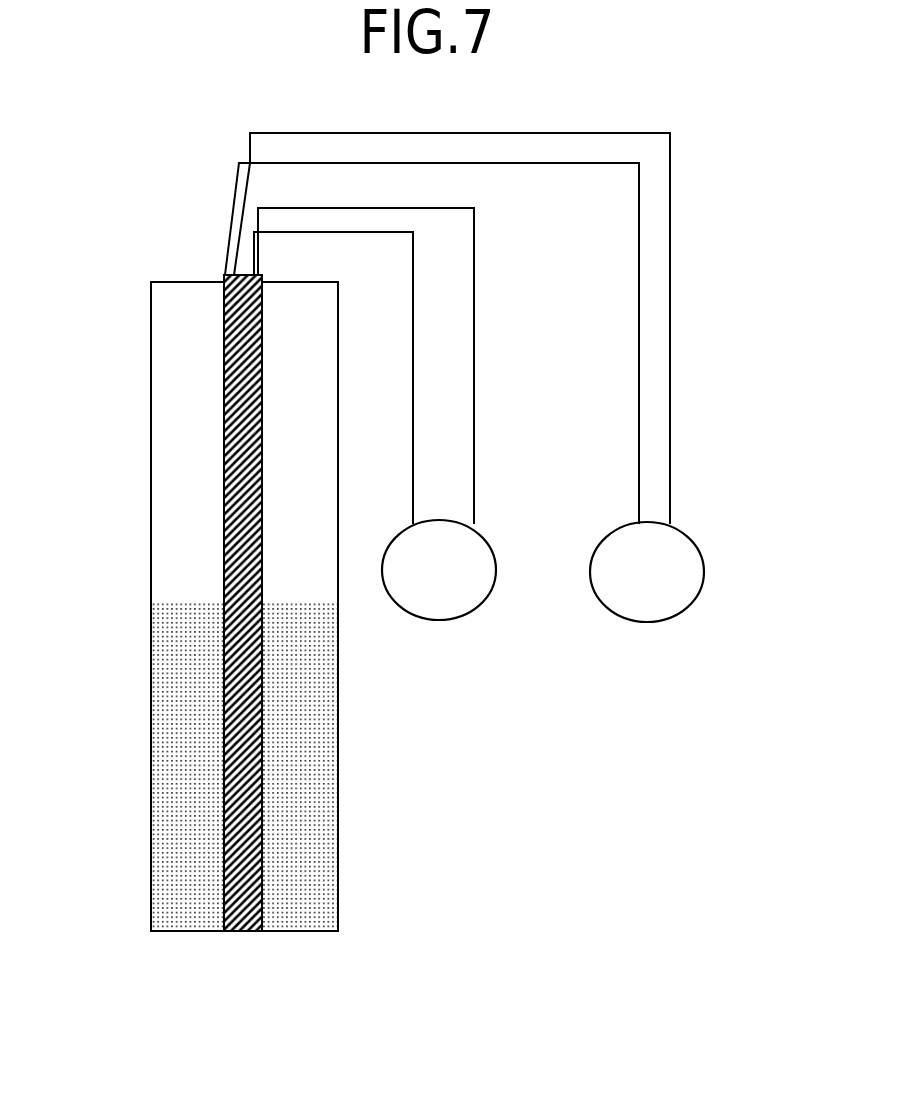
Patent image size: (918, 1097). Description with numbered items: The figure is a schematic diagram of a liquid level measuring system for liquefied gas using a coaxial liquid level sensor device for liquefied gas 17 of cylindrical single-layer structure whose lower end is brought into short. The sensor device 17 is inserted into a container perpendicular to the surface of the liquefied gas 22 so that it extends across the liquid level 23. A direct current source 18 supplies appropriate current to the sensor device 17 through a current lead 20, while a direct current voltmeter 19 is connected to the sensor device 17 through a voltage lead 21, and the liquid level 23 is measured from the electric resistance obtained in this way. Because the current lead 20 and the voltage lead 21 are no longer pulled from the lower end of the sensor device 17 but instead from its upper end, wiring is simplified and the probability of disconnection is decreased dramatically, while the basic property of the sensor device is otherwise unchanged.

The liquid level sensor device for liquefied gas 17 is at (224, 430).
The direct current source 18 is at (704, 555).
The direct current voltmeter 19 is at (493, 555).
The current lead 20 is at (642, 317).
The voltage lead 21 is at (414, 357).
The liquefied gas 22 is at (177, 810).
The liquid level 23 is at (151, 603).